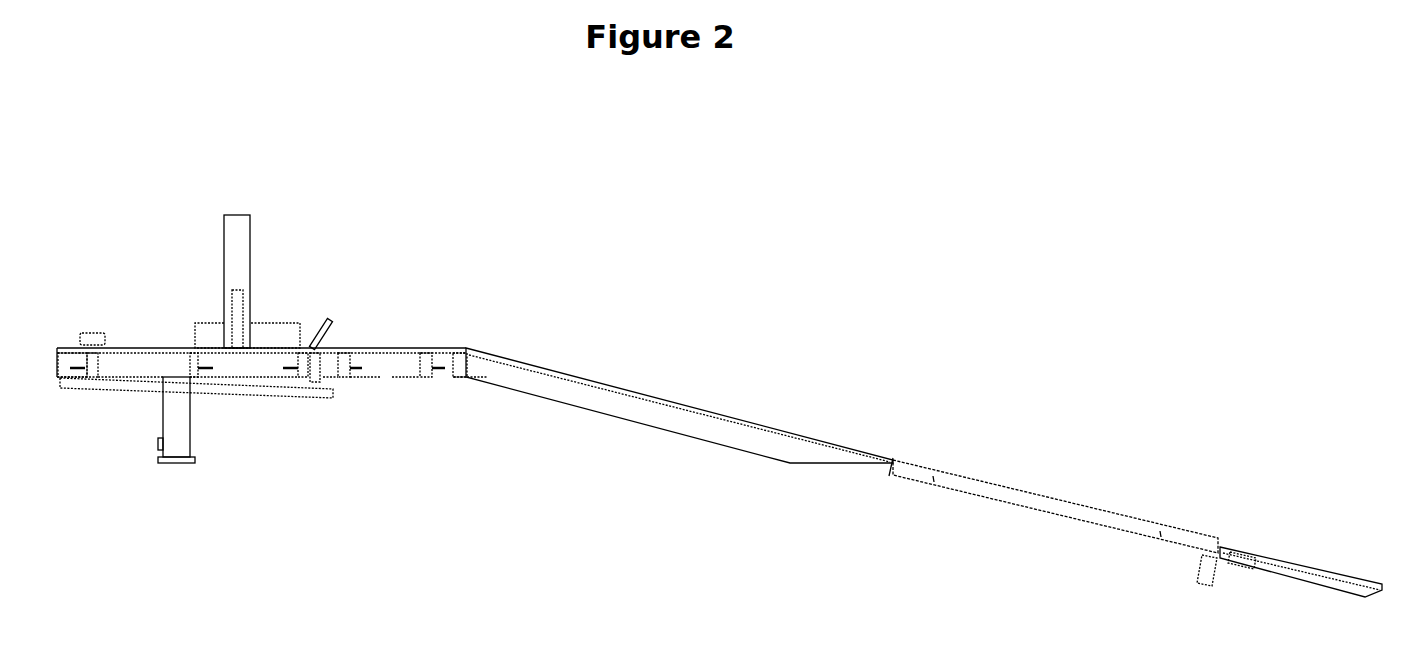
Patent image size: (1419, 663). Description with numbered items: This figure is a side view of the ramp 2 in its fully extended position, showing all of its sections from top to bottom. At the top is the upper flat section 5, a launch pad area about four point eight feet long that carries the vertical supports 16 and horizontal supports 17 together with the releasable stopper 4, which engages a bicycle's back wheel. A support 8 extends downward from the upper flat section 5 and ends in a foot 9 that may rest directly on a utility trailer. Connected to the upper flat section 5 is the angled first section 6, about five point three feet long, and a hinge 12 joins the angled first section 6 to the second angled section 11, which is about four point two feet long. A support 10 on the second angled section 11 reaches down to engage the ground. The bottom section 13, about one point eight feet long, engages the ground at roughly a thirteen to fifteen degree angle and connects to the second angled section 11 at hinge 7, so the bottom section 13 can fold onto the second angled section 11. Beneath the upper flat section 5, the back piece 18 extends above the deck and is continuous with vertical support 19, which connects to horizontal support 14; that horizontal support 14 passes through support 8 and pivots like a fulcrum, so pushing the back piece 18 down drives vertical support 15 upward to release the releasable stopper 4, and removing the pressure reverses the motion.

The ramp 2 is at (631, 352).
The releasable stopper 4 is at (333, 323).
The upper flat section 5 is at (148, 348).
The angled first section 6 is at (602, 388).
The hinge 7 is at (1232, 548).
The support 8 is at (183, 423).
The foot 9 is at (178, 463).
The support 10 is at (1198, 571).
The second angled section 11 is at (1020, 497).
The hinge 12 is at (894, 461).
The bottom section 13 is at (1325, 575).
The horizontal support 14 is at (220, 387).
The vertical support 15 is at (318, 378).
The vertical supports 16 is at (238, 227).
The horizontal supports 17 is at (282, 330).
The back piece 18 is at (90, 335).
The vertical support 19 is at (93, 360).